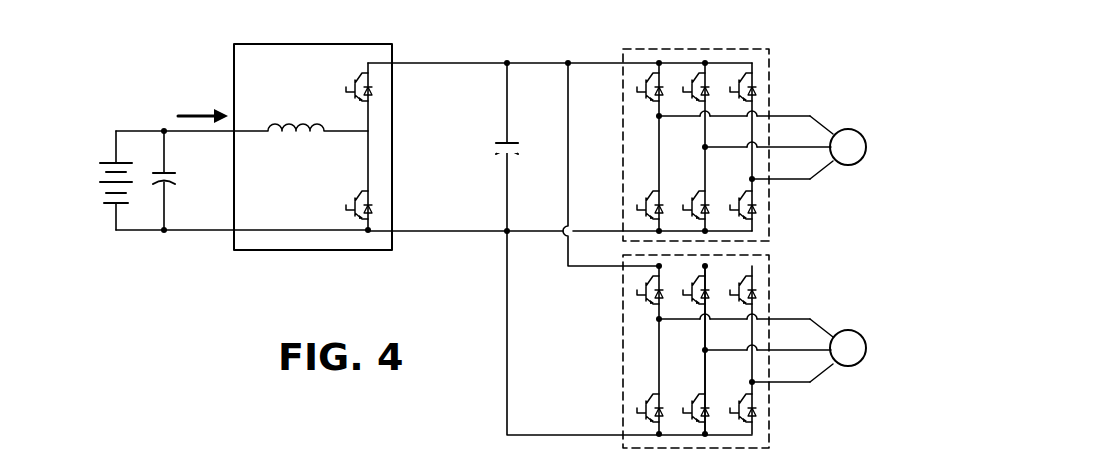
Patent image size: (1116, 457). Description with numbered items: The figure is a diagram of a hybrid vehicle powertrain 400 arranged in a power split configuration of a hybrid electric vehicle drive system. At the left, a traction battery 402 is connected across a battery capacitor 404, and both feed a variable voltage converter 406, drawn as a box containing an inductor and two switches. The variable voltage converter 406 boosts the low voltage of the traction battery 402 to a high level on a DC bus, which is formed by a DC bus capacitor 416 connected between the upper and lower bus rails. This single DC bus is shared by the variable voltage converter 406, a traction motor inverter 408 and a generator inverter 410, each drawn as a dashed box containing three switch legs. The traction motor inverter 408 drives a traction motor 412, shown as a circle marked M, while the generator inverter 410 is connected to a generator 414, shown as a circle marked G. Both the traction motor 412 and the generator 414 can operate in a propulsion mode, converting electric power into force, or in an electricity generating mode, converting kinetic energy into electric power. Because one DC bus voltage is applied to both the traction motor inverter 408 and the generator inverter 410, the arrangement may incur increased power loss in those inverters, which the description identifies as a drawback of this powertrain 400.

The hybrid vehicle powertrain 400 is at (780, 44).
The traction battery 402 is at (108, 160).
The battery capacitor 404 is at (158, 170).
The variable voltage converter 406 is at (333, 44).
The traction motor inverter 408 is at (696, 48).
The generator inverter 410 is at (623, 375).
The traction motor 412 is at (848, 129).
The generator 414 is at (848, 330).
The DC bus capacitor 416 is at (504, 138).